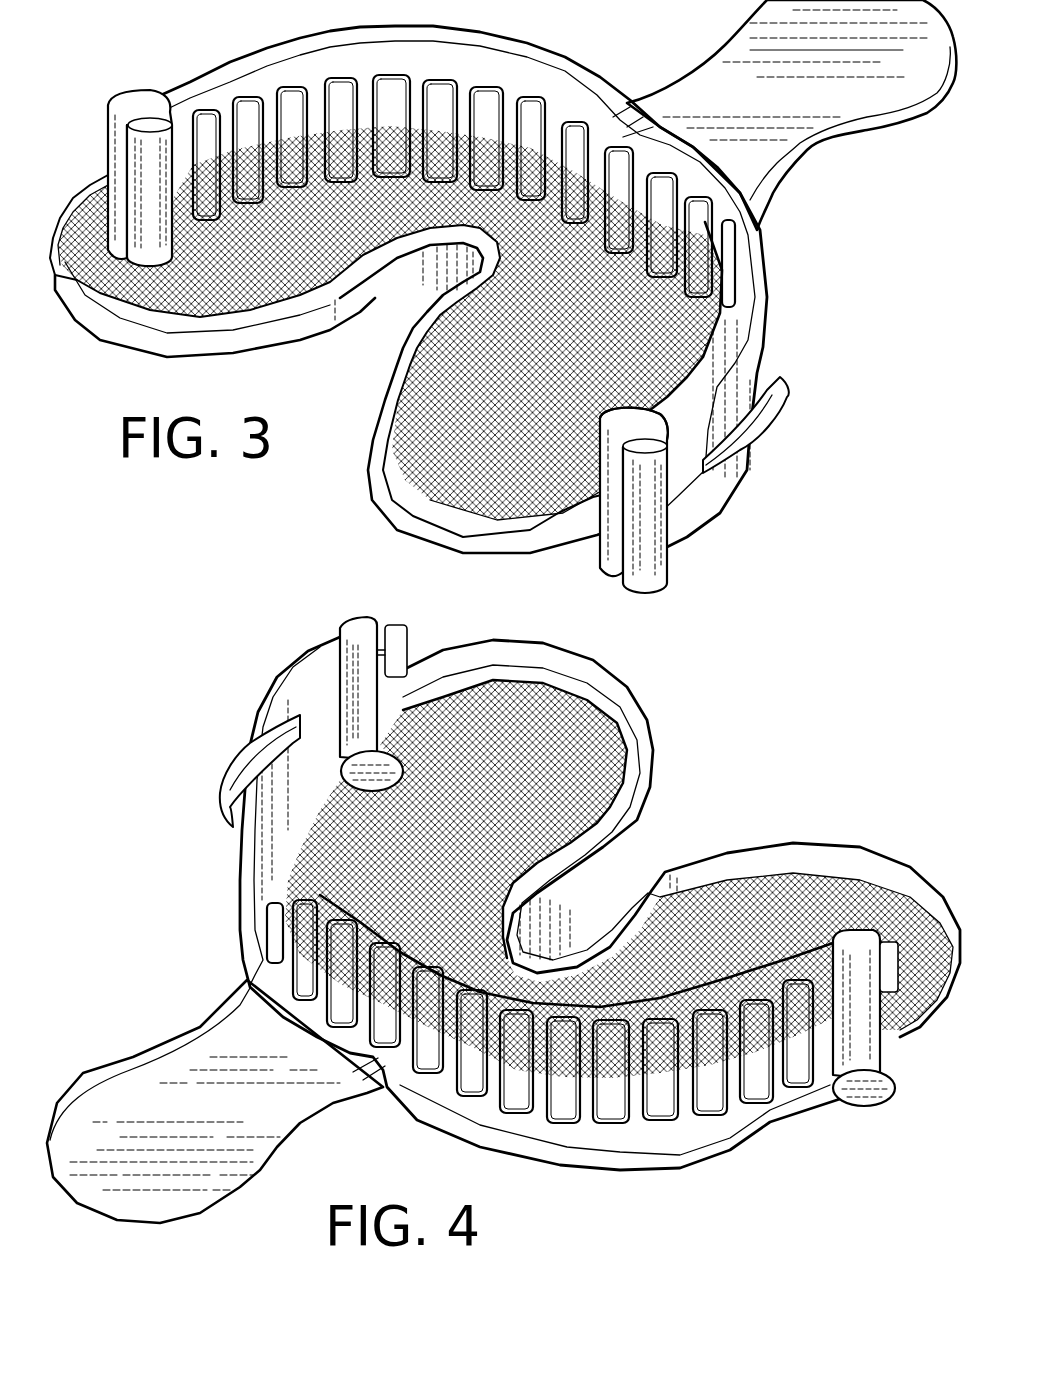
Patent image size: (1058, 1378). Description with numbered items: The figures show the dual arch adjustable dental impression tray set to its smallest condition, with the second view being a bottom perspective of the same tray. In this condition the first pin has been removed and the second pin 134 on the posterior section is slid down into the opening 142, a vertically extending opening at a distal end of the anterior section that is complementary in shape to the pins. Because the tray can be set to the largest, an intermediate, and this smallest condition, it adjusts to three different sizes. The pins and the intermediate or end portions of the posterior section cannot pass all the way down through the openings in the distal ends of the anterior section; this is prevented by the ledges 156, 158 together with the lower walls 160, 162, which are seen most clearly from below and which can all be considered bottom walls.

In FIG. 3, the second pin 134 is at (620, 478).
In FIG. 3, the opening 142 is at (640, 428).
In FIG. 4, the ledge 156 is at (397, 697).
In FIG. 4, the ledge 158 is at (887, 1025).
In FIG. 4, the lower wall 160 is at (357, 767).
In FIG. 4, the lower wall 162 is at (867, 1102).